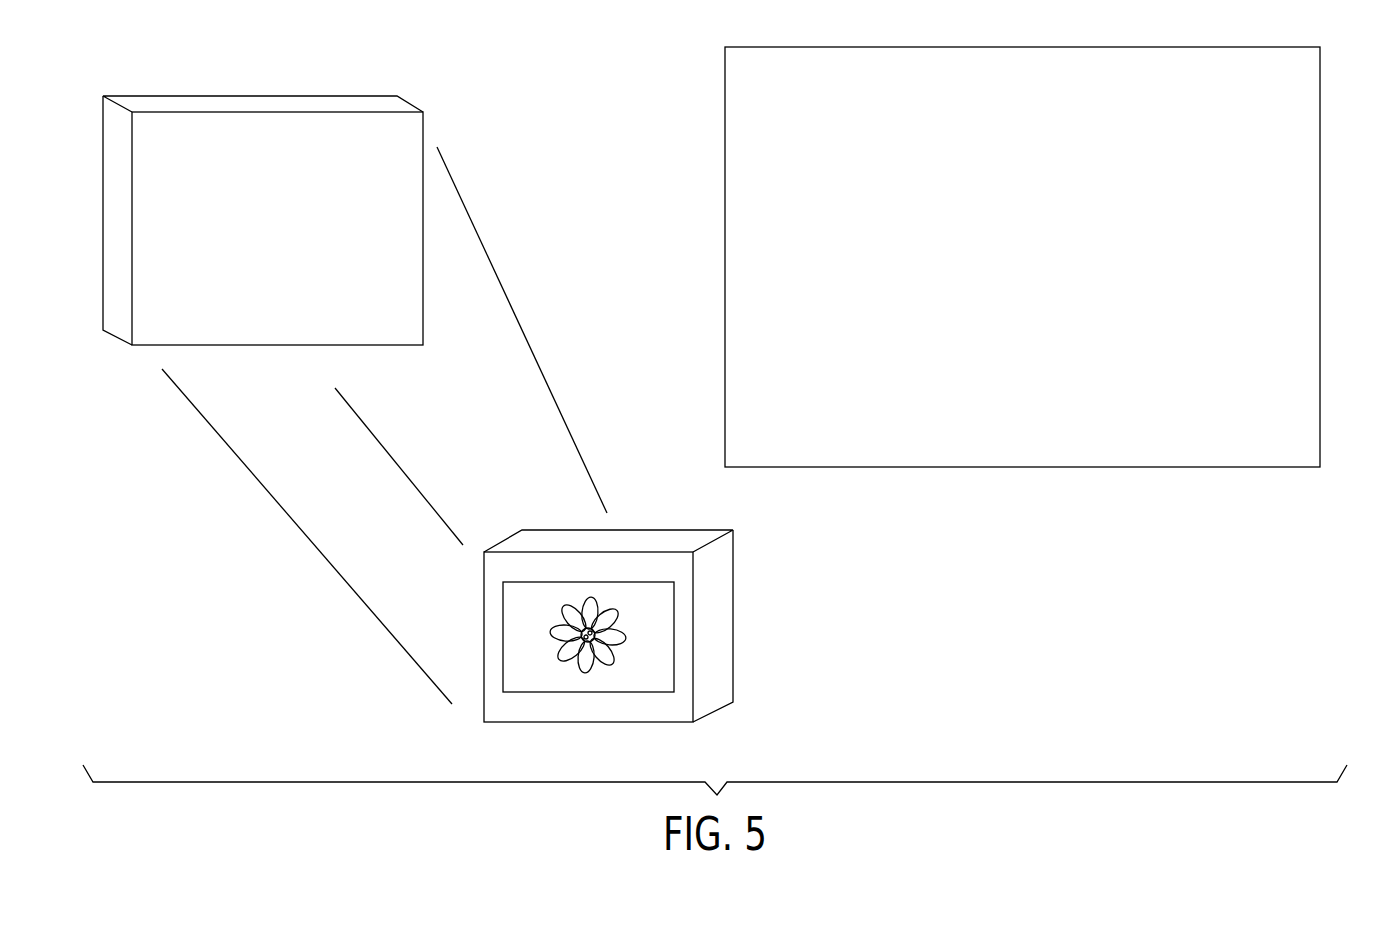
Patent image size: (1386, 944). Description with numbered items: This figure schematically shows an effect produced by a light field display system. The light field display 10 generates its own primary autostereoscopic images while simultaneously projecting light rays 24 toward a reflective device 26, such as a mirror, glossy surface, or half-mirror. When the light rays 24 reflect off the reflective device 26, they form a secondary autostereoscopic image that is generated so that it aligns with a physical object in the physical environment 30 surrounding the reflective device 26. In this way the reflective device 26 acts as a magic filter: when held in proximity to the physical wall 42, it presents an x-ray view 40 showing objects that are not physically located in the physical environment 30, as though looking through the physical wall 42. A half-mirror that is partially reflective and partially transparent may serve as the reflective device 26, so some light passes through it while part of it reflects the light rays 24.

The light field display 10 is at (426, 95).
The light rays 24 is at (282, 555).
The reflective device 26 is at (470, 718).
The physical environment 30 is at (918, 642).
The x-ray view 40 is at (597, 640).
The physical wall 42 is at (675, 637).